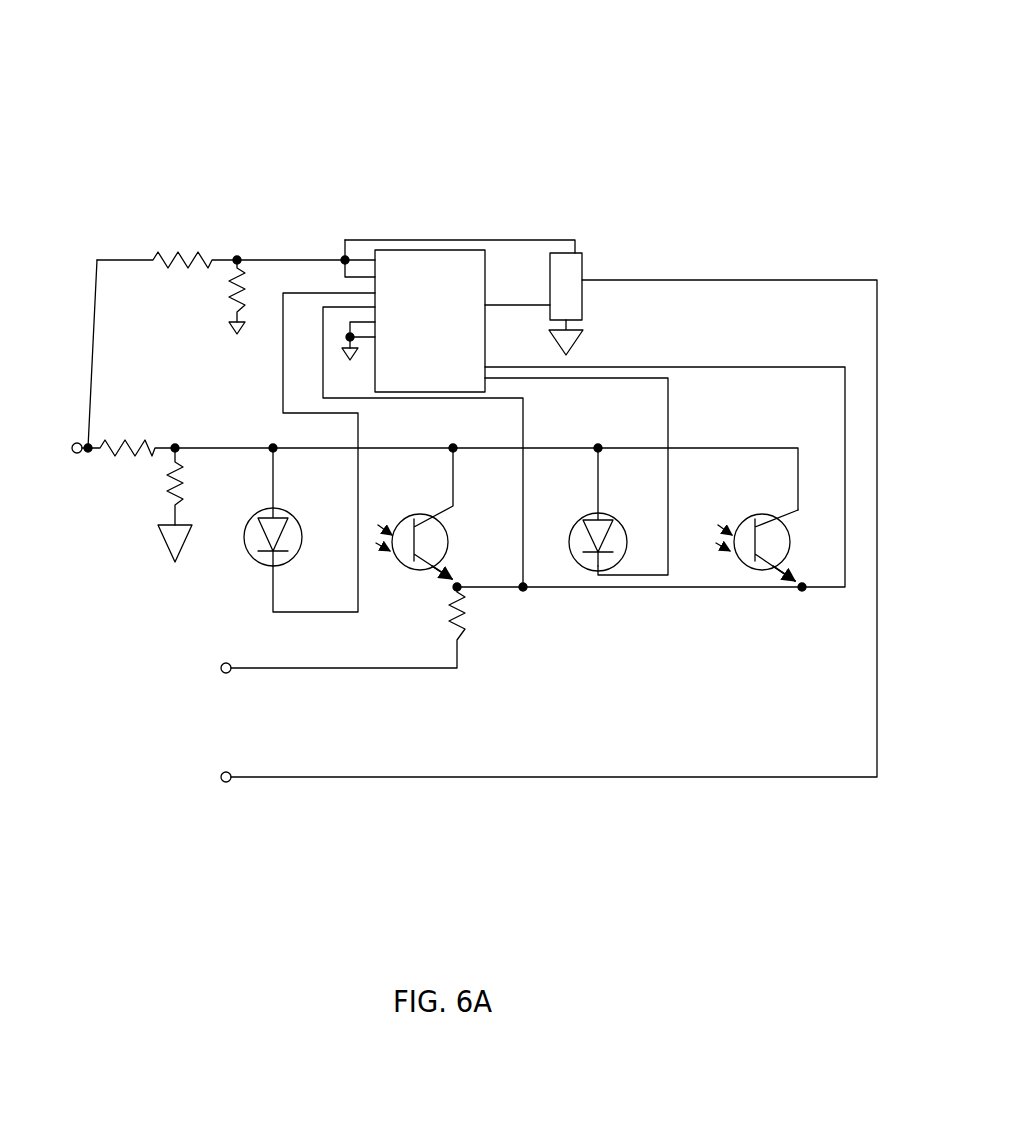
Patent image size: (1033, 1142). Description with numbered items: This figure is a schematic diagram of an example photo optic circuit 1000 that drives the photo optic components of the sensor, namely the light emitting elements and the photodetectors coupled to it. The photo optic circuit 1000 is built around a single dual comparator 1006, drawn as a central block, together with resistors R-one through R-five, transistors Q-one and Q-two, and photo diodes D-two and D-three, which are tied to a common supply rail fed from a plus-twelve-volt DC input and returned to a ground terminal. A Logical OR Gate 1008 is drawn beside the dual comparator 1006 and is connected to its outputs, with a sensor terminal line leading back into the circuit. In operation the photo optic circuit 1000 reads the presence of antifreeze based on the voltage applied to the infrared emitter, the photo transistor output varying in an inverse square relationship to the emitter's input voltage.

The photo optic circuit 1000 is at (839, 56).
The dual comparator 1006 is at (430, 321).
The Logical OR Gate 1008 is at (568, 290).